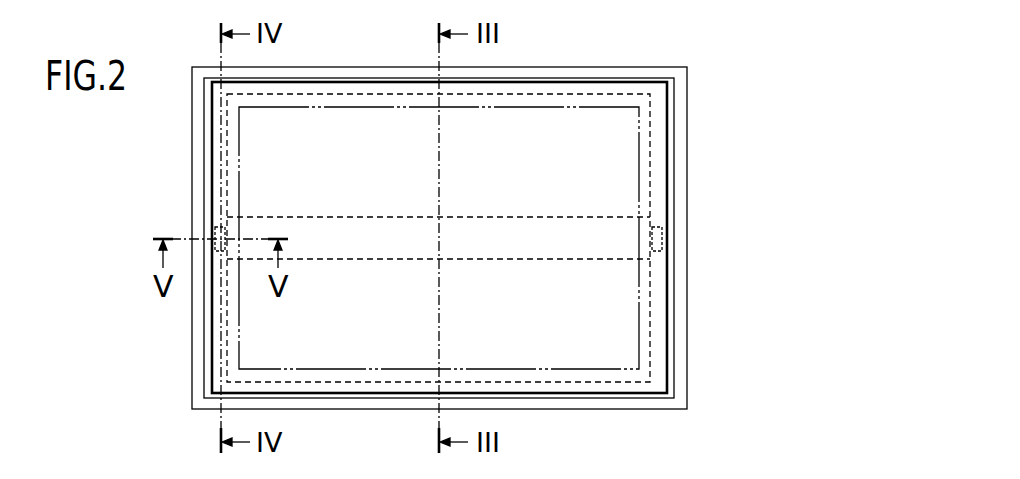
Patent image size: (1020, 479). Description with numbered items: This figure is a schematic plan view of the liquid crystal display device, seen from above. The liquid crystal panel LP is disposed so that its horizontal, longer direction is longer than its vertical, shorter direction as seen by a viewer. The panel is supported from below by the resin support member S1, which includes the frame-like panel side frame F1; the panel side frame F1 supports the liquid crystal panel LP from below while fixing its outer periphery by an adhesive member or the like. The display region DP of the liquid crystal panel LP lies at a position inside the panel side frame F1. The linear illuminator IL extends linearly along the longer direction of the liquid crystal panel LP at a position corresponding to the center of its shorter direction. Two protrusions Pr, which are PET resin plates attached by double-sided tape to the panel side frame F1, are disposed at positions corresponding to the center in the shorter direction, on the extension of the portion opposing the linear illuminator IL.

The support member S1 is at (678, 303).
The liquid crystal panel LP is at (658, 383).
The panel side frame F1 is at (643, 345).
The display region DP is at (573, 370).
The linear illuminator IL is at (607, 218).
The protrusion Pr is at (211, 230).